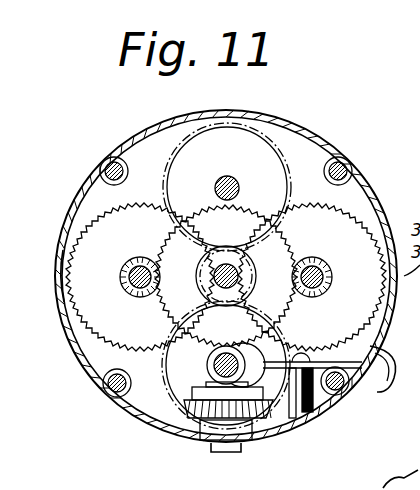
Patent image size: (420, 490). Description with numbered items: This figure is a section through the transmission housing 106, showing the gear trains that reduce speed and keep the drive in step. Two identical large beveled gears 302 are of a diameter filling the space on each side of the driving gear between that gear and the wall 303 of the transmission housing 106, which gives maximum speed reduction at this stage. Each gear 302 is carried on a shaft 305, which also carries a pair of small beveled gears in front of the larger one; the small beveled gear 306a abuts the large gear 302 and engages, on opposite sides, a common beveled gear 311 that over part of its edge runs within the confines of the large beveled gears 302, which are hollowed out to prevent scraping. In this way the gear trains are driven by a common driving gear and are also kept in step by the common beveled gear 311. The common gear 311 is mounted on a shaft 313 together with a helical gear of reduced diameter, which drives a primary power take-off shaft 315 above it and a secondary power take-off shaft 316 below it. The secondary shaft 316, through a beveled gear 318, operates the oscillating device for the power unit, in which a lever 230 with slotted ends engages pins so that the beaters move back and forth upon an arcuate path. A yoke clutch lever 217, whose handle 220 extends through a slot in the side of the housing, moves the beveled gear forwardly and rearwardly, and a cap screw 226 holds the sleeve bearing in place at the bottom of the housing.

The transmission housing 106 is at (297, 133).
The beveled gear 302 is at (86, 222).
The wall 303 is at (58, 273).
The small beveled gear 306a is at (324, 257).
The shaft 305 is at (126, 287).
The common beveled gear 311 is at (244, 240).
The shaft 313 is at (238, 284).
The primary power take-off shaft 315 is at (230, 178).
The secondary power take-off shaft 316 is at (206, 363).
The yoke clutch lever 217 is at (360, 356).
The handle 220 is at (374, 367).
The beveled gear 318 is at (198, 399).
The lever 230 is at (255, 411).
The cap screw 226 is at (218, 450).